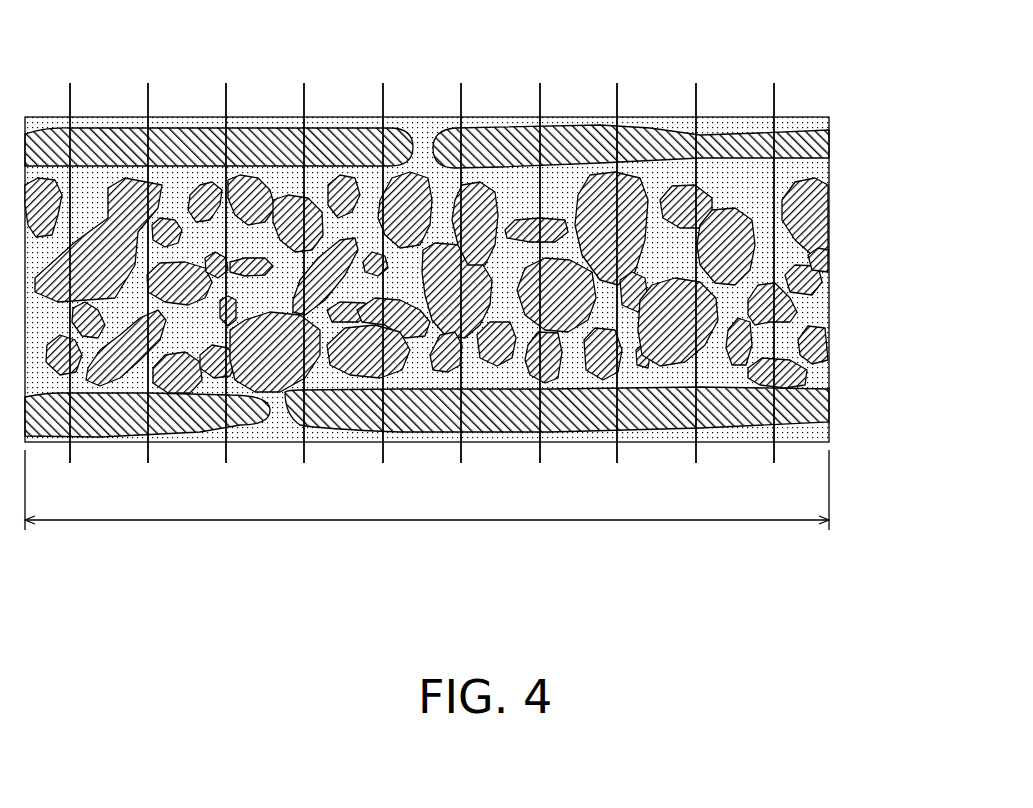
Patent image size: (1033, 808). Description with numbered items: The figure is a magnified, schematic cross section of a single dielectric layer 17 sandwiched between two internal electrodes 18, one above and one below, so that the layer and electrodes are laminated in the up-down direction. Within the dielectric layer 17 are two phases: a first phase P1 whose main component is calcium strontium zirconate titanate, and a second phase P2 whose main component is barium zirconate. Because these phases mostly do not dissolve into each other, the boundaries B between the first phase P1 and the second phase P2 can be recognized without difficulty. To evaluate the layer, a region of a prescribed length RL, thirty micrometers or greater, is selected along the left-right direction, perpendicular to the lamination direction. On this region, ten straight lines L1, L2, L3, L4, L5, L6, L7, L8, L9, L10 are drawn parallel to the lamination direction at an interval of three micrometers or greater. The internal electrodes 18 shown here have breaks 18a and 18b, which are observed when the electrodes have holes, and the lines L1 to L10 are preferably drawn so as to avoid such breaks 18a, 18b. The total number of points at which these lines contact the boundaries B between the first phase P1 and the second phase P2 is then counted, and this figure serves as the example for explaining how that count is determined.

The dielectric layer 17 is at (866, 168).
The internal electrodes 18 is at (829, 148).
The break 18a is at (418, 150).
The break 18b is at (285, 400).
The first phase P1 is at (745, 195).
The second phase P2 is at (727, 262).
The boundaries B is at (757, 228).
The prescribed length RL is at (427, 490).
The line L1 is at (70, 259).
The line L2 is at (148, 259).
The line L3 is at (226, 259).
The line L4 is at (304, 259).
The line L5 is at (383, 259).
The line L6 is at (461, 259).
The line L7 is at (540, 259).
The line L8 is at (617, 259).
The line L9 is at (696, 259).
The line L10 is at (774, 259).